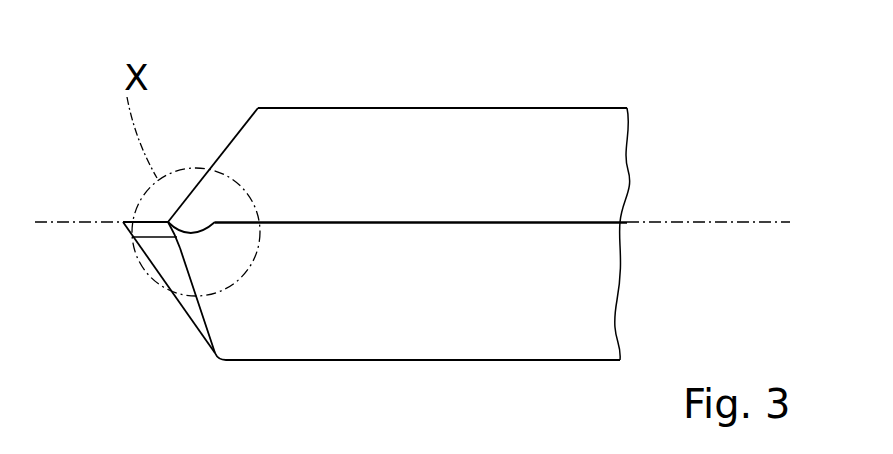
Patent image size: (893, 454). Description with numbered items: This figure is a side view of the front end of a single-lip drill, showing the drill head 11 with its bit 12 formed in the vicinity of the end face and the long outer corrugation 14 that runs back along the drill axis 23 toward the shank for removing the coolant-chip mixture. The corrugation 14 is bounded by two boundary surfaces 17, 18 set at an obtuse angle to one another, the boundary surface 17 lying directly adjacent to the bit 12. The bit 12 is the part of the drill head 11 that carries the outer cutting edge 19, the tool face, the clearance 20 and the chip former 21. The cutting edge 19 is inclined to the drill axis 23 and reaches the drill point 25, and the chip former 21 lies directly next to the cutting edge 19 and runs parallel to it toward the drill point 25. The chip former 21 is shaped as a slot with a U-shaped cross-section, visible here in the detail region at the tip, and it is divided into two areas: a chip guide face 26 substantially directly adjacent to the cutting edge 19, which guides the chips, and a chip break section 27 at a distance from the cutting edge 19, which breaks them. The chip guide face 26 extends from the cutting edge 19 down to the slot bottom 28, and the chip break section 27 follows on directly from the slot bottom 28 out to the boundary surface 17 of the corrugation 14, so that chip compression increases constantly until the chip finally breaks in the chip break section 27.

The drill head 11 is at (672, 100).
The bit 12 is at (100, 196).
The corrugation 14 is at (598, 166).
The boundary surface 17 is at (322, 220).
The boundary surface 18 is at (428, 163).
The cutting edge 19 is at (140, 237).
The clearance 20 is at (198, 316).
The chip former 21 is at (199, 212).
The drill axis 23 is at (787, 222).
The drill point 25 is at (123, 223).
The chip guide face 26 is at (177, 240).
The chip break section 27 is at (205, 232).
The slot bottom 28 is at (202, 235).